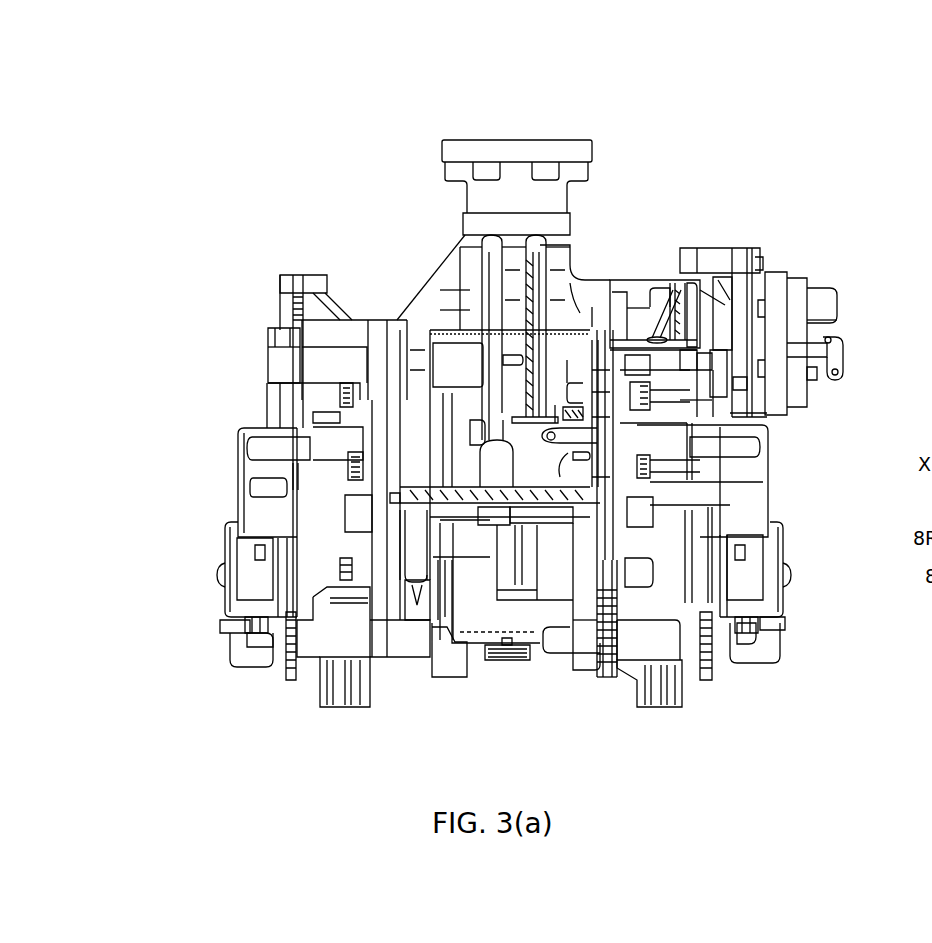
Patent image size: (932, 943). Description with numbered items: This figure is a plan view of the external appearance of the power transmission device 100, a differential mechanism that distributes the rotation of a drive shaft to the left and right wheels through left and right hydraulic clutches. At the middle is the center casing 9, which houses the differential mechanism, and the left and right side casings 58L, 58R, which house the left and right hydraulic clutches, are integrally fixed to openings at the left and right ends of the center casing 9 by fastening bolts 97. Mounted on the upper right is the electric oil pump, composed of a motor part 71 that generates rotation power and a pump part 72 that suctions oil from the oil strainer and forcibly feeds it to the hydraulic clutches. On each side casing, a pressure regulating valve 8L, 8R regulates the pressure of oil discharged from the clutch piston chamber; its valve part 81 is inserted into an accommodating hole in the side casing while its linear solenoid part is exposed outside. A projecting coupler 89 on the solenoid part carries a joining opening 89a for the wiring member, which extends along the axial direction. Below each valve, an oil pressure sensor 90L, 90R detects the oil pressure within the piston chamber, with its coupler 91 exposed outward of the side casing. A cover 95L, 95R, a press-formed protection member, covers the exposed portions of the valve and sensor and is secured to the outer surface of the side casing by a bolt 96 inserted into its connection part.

The power transmission device 100 is at (681, 122).
The center casing 9 is at (589, 265).
The left side casing 58L is at (370, 312).
The right side casing 58R is at (633, 277).
The pump part 72 is at (730, 248).
The motor part 71 is at (840, 310).
The fastening bolts 97 is at (348, 468).
The left pressure regulating valve 8L is at (249, 553).
The right pressure regulating valve 8R is at (782, 543).
The valve part 81 is at (250, 560).
The bolt 96 is at (218, 575).
The left cover 95L is at (223, 600).
The right cover 95R is at (780, 592).
The left oil pressure sensor 90L is at (233, 660).
The right oil pressure sensor 90R is at (780, 643).
The coupler 91 is at (260, 668).
The coupler 89 is at (278, 627).
The joining opening 89a is at (283, 623).